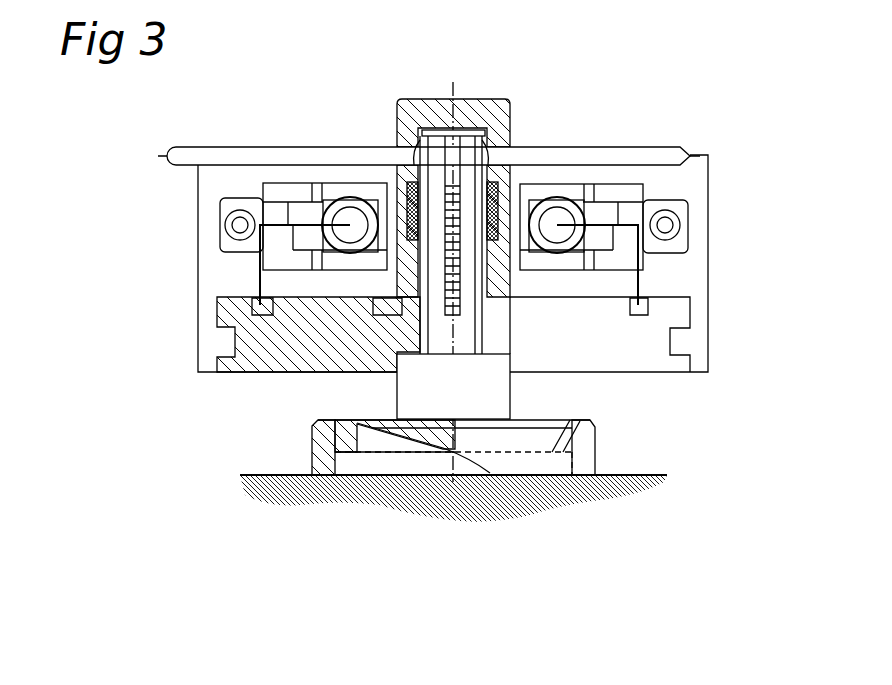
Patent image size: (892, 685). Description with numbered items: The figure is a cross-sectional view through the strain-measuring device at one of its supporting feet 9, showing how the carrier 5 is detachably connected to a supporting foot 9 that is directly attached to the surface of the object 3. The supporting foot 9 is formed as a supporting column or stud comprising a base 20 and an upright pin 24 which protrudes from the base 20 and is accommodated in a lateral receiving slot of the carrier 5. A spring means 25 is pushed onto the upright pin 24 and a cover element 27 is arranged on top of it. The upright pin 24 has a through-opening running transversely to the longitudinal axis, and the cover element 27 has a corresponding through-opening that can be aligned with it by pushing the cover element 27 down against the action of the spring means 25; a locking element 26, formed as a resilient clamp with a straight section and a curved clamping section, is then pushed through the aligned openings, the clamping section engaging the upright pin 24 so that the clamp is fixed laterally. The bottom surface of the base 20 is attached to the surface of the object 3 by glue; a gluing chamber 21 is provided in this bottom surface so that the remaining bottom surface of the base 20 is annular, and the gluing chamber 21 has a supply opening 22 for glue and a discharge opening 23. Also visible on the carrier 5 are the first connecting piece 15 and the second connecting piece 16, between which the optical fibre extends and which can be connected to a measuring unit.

The object 3 is at (372, 487).
The carrier 5 is at (652, 330).
The supporting foot 9 is at (624, 461).
The first connecting piece 15 is at (278, 255).
The second connecting piece 16 is at (620, 205).
The base 20 is at (318, 452).
The gluing chamber 21 is at (436, 463).
The supply opening 22 is at (333, 418).
The discharge opening 23 is at (585, 422).
The upright pin 24 is at (480, 332).
The spring means 25 is at (498, 188).
The locking element 26 is at (244, 152).
The cover element 27 is at (486, 108).